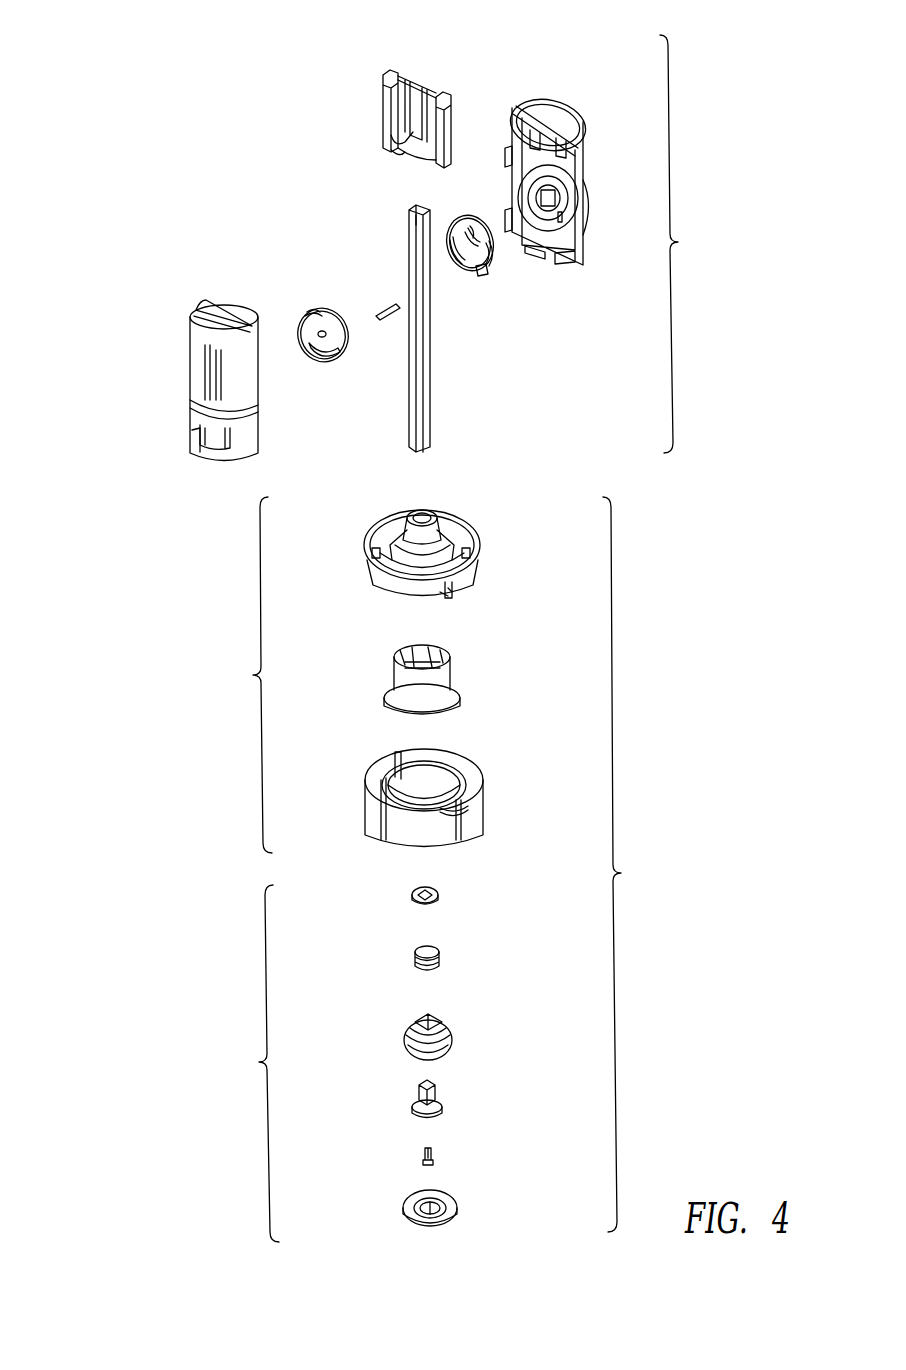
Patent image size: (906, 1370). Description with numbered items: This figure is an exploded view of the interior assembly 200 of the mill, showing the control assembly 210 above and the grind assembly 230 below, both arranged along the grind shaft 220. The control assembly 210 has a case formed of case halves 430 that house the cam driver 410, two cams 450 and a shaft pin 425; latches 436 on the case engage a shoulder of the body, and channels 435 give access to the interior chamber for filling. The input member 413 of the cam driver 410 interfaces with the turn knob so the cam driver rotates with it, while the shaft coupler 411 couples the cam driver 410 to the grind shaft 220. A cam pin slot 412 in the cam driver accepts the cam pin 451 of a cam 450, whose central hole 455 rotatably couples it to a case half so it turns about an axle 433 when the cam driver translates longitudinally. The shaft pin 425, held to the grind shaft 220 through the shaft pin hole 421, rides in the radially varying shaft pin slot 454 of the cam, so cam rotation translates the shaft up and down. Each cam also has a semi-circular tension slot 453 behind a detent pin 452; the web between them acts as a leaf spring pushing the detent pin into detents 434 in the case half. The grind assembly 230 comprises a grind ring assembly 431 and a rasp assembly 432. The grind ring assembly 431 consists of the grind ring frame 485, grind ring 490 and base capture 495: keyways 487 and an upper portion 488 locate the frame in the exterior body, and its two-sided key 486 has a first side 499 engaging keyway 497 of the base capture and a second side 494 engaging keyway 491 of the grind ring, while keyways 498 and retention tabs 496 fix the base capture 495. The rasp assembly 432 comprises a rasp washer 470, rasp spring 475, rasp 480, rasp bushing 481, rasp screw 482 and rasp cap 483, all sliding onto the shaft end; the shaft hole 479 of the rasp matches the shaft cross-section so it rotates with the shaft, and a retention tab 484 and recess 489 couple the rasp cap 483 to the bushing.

The lock assembly 200 is at (196, 147).
The control assembly 210 is at (689, 244).
The grind shaft 220 is at (432, 344).
The grind assembly 230 is at (629, 864).
The cam driver 410 is at (434, 56).
The shaft coupler 411 is at (410, 80).
The cam pin slot 412 is at (383, 130).
The input member 413 is at (385, 70).
The shaft pin hole 421 is at (412, 296).
The shaft pin 425 is at (385, 304).
The case half 430 is at (575, 104).
The grind ring assembly 431 is at (247, 675).
The rasp assembly 432 is at (253, 1063).
The axle 433 is at (544, 210).
The detents 434 is at (562, 186).
The channels 435 is at (551, 108).
The latches 436 is at (192, 440).
The cam 450 is at (497, 275).
The cam pin 451 is at (474, 280).
The detent pin 452 is at (488, 240).
The tension slot 453 is at (474, 224).
The shaft pin slot 454 is at (450, 248).
The central hole 455 is at (466, 222).
The rasp washer 470 is at (440, 888).
The rasp spring 475 is at (440, 952).
The shaft hole 479 is at (432, 1024).
The rasp 480 is at (465, 1033).
The rasp bushing 481 is at (451, 1087).
The rasp screw 482 is at (441, 1163).
The rasp cap 483 is at (457, 1214).
The retention tab 484 is at (425, 1198).
The grind ring frame 485 is at (493, 554).
The two-sided key 486 is at (457, 598).
The keyways 487 is at (466, 516).
The upper portion 488 is at (381, 516).
The recess 489 is at (440, 1118).
The grind ring 490 is at (470, 671).
The keyway 491 is at (455, 704).
The second side 494 is at (441, 600).
The base capture 495 is at (487, 798).
The retention tabs 496 is at (384, 762).
The keyway 497 is at (398, 770).
The keyways 498 is at (455, 758).
The first side 499 is at (458, 596).